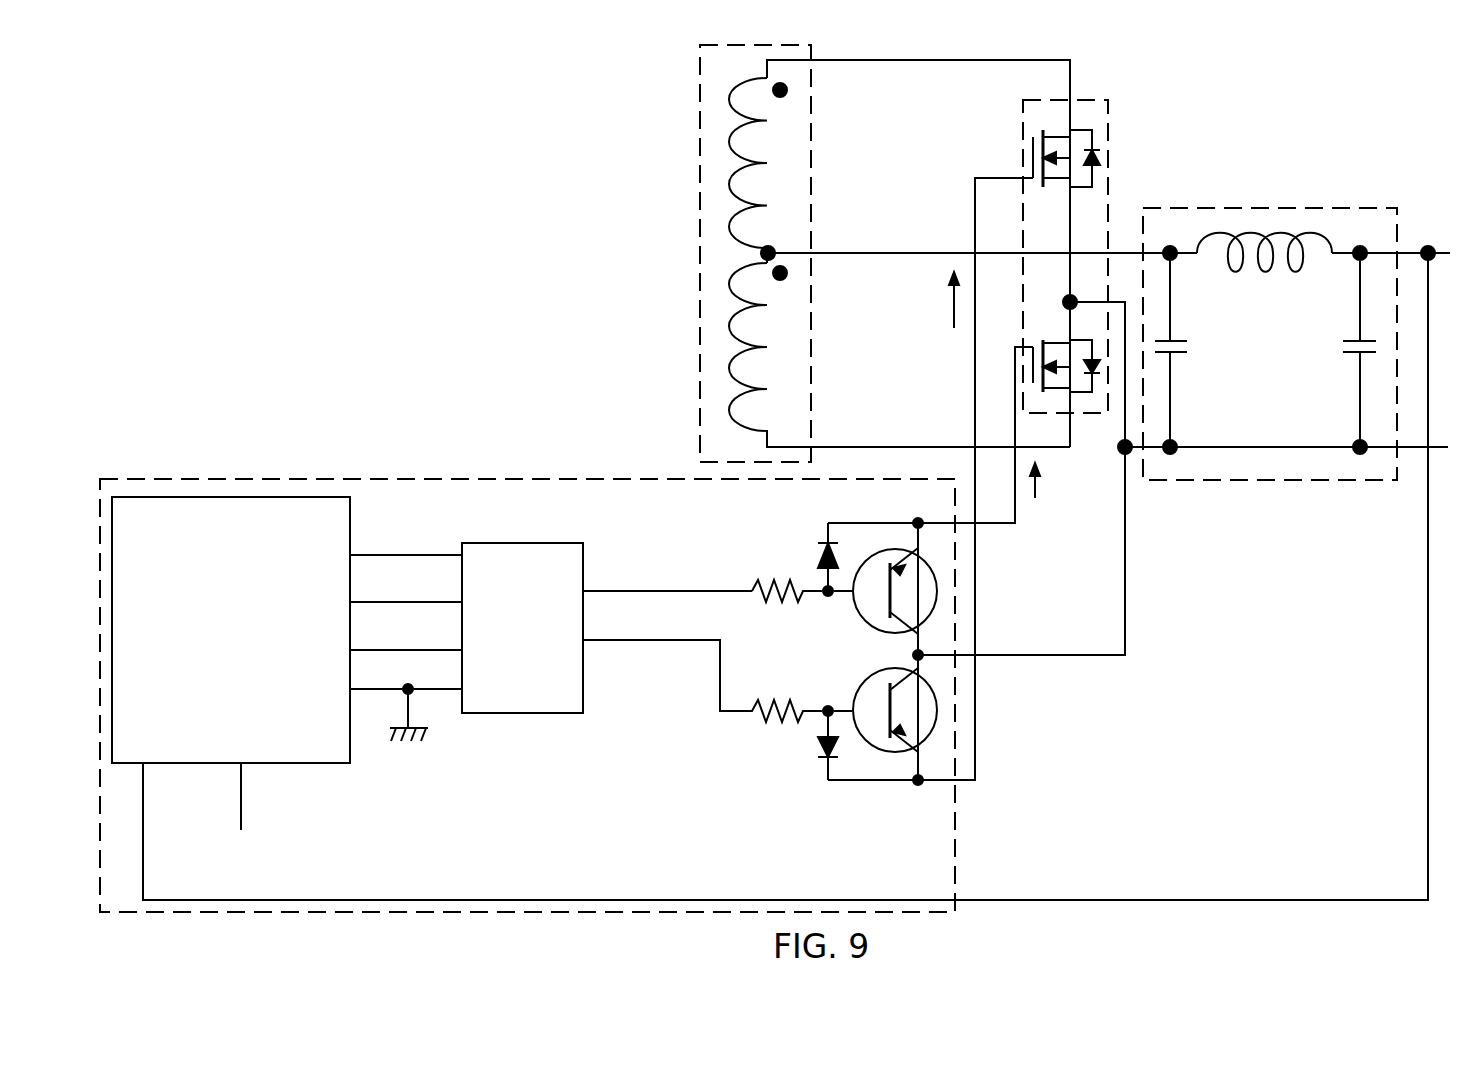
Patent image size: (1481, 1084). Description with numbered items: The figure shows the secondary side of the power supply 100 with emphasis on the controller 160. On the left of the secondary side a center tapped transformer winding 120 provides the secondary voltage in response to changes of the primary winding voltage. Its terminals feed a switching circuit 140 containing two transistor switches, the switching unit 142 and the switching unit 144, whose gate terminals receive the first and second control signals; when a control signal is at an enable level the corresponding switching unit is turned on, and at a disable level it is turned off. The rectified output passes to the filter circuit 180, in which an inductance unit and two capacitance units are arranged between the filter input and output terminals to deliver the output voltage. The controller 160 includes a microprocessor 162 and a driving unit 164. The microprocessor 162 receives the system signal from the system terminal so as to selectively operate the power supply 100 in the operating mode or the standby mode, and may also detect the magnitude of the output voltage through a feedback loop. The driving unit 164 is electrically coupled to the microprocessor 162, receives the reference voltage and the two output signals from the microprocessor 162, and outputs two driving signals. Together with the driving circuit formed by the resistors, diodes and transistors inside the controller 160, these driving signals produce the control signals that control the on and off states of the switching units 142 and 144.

The power supply 100 is at (165, 110).
The transformer winding 120 is at (700, 153).
The switching circuit 140 is at (1023, 150).
The switching unit 142 is at (1100, 123).
The switching unit 144 is at (1023, 378).
The controller 160 is at (438, 478).
The microprocessor 162 is at (212, 659).
The driving unit 164 is at (503, 672).
The filter circuit 180 is at (1282, 212).